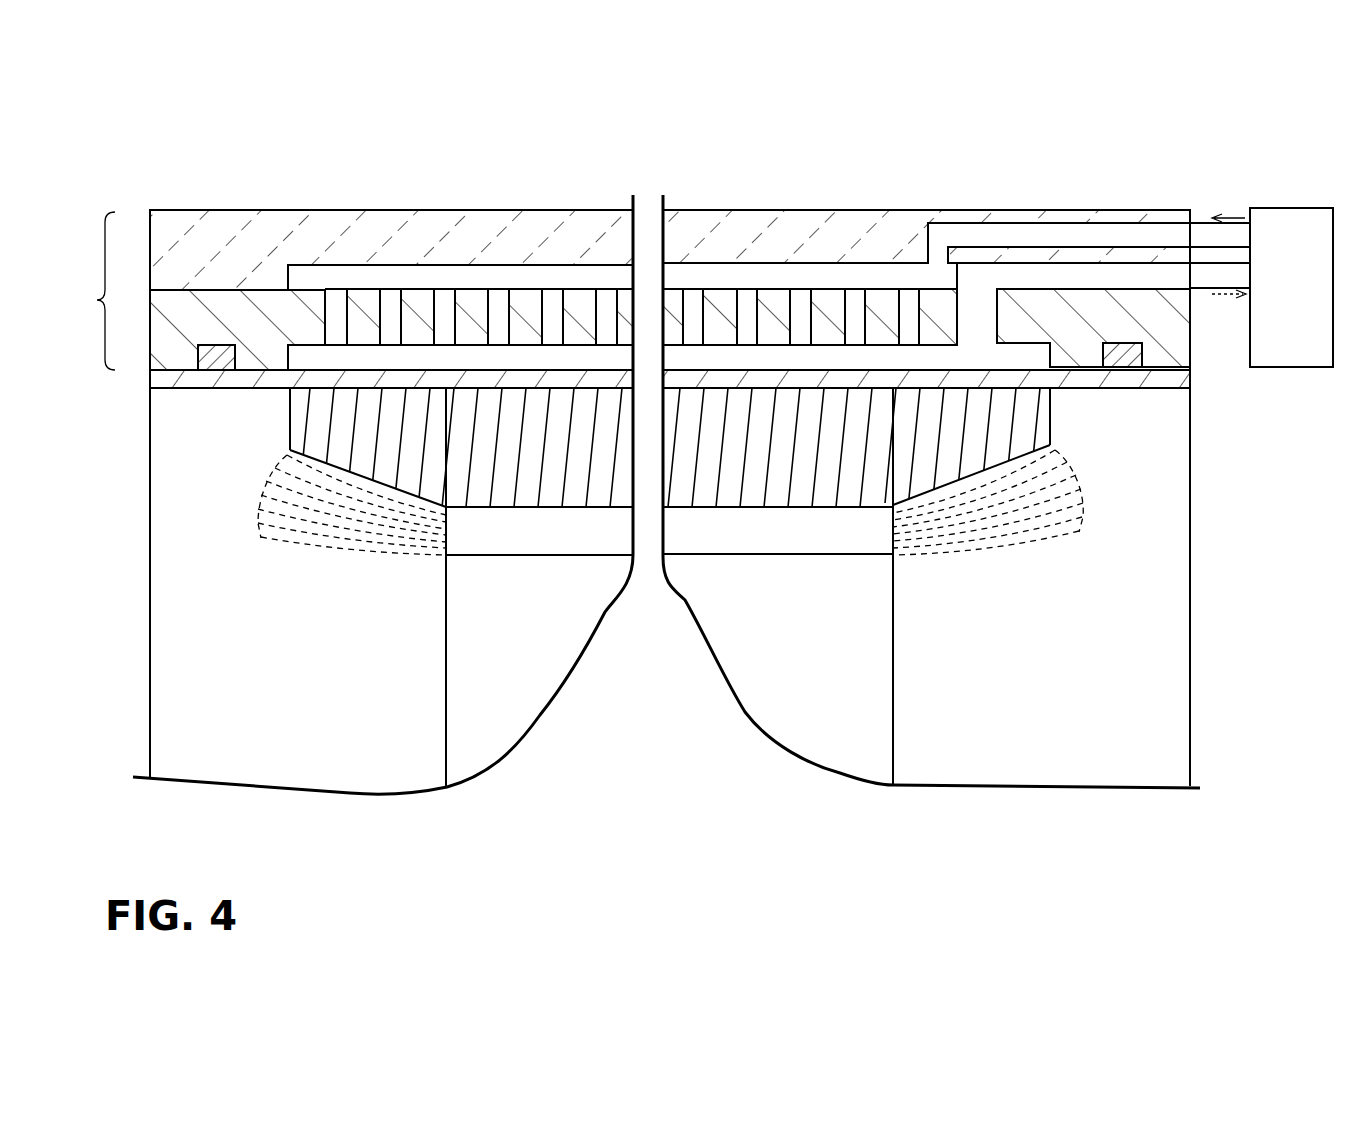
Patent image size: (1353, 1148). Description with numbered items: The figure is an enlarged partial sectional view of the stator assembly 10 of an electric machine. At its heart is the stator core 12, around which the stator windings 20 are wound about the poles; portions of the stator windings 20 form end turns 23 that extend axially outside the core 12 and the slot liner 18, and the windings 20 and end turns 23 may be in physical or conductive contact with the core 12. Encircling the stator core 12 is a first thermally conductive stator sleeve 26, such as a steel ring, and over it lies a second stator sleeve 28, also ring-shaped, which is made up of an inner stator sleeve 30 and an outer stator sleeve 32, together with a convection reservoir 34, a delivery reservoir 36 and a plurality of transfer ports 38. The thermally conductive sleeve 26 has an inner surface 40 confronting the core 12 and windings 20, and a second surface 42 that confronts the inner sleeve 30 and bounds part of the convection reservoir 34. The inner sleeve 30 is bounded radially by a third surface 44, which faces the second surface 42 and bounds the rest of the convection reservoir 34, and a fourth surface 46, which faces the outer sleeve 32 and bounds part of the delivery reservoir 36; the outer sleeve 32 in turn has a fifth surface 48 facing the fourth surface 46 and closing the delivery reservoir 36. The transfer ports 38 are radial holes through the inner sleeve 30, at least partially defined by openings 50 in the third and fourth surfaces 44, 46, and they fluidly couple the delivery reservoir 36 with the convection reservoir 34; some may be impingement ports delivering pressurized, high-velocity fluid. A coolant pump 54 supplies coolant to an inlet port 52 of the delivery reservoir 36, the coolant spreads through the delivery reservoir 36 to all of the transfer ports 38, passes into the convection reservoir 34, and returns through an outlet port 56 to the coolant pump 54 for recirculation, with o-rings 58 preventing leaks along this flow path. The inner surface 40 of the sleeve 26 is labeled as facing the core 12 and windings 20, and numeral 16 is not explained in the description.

The stator assembly 10 is at (682, 84).
The stator core 12 is at (805, 483).
The magnetic core 16 is at (860, 526).
The slot liner 18 is at (718, 533).
The stator windings 20 is at (277, 552).
The end turns 23 is at (1110, 503).
The thermally conductive stator sleeve 26 is at (139, 387).
The second stator sleeve 28 is at (90, 291).
The inner stator sleeve 30 is at (163, 308).
The outer stator sleeve 32 is at (234, 238).
The convection reservoir 34 is at (320, 357).
The delivery reservoir 36 is at (362, 274).
The transfer ports 38 is at (552, 303).
The inner surface 40 is at (188, 389).
The second surface 42 is at (173, 365).
The third surface 44 is at (892, 340).
The fourth surface 46 is at (877, 288).
The fifth surface 48 is at (817, 262).
The openings 50 is at (747, 293).
The inlet port 52 is at (1202, 237).
The coolant pump 54 is at (1303, 300).
The outlet port 56 is at (1205, 282).
The o-rings 58 is at (218, 343).